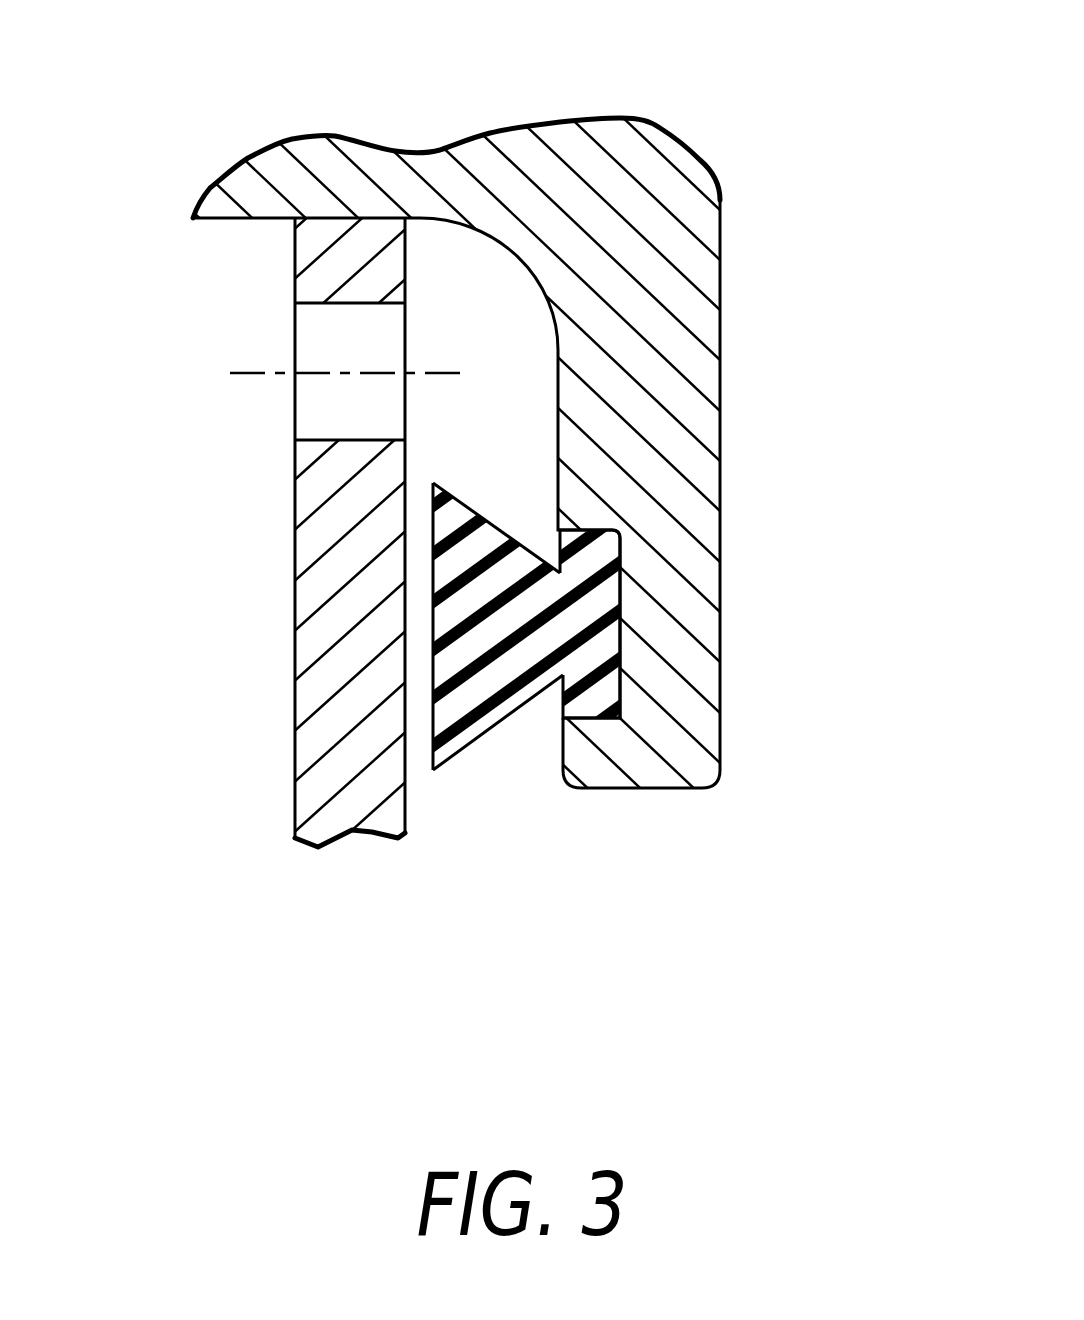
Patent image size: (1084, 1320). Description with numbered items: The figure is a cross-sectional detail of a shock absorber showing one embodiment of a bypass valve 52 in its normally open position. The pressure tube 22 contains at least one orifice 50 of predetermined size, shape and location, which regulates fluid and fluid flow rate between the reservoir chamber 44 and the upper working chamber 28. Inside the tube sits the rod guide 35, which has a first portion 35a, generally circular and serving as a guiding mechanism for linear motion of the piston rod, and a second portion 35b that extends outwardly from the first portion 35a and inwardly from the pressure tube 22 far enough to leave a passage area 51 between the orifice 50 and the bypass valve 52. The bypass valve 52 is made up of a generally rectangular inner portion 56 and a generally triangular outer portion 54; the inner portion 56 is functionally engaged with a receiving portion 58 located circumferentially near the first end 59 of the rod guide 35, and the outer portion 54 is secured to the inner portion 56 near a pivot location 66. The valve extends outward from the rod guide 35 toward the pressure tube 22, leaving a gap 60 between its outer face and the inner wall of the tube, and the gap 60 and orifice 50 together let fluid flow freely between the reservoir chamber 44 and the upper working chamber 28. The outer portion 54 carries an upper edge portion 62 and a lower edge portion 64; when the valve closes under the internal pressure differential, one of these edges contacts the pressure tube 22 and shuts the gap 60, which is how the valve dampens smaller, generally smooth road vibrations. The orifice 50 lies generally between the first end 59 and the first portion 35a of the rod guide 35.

The pressure tube 22 is at (320, 688).
The upper working chamber 28 is at (575, 1042).
The rod guide 35 is at (728, 617).
The first portion 35a is at (640, 172).
The second portion 35b is at (693, 712).
The reservoir chamber 44 is at (70, 472).
The orifice 50 is at (320, 350).
The passage area 51 is at (455, 332).
The bypass valve 52 is at (505, 513).
The outer portion 54 is at (488, 682).
The inner portion 56 is at (600, 595).
The receiving portion 58 is at (600, 528).
The first end 59 is at (648, 790).
The gap 60 is at (423, 583).
The upper edge portion 62 is at (450, 530).
The lower edge portion 64 is at (450, 710).
The pivot location 66 is at (693, 787).